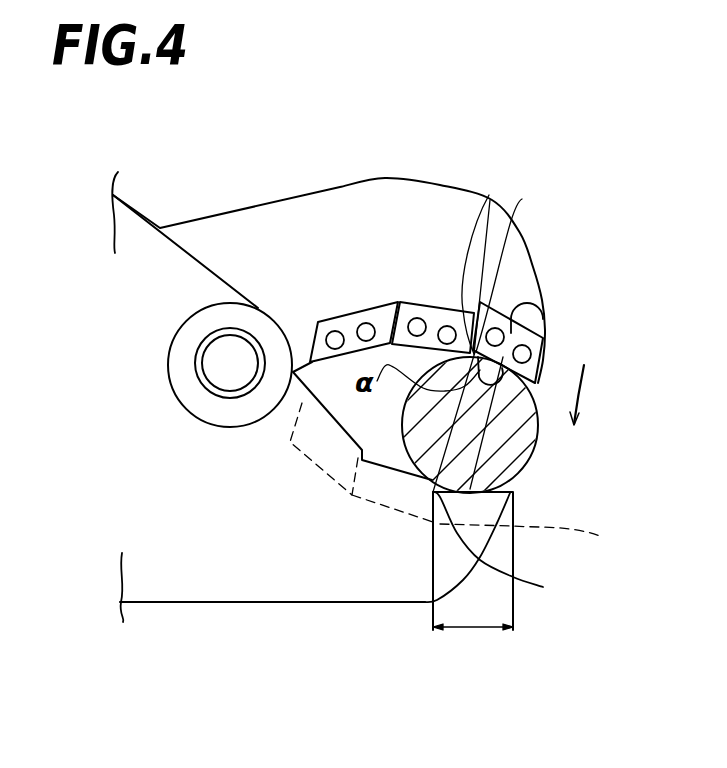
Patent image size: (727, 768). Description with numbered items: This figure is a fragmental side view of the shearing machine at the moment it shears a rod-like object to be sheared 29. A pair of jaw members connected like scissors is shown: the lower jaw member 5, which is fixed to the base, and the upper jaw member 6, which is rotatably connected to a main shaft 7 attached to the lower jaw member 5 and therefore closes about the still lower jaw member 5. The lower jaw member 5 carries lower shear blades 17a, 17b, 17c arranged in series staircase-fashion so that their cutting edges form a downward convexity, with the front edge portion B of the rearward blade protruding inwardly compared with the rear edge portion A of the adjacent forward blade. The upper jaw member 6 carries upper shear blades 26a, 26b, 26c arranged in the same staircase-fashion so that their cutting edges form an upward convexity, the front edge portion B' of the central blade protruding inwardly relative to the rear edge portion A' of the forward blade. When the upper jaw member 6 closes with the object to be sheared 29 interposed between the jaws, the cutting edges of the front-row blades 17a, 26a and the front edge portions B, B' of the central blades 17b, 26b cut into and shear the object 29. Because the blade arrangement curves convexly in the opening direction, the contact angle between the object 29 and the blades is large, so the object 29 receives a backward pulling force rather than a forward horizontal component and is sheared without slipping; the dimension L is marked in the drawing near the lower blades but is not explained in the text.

The lower jaw member 5 is at (201, 585).
The upper jaw member 6 is at (270, 215).
The main shaft 7 is at (212, 377).
The lower shear blade 17a is at (545, 535).
The lower shear blade 17b is at (373, 500).
The lower shear blade 17c is at (311, 462).
The upper shear blade 26a is at (545, 307).
The upper shear blade 26b is at (433, 318).
The upper shear blade 26c is at (352, 318).
The object to be sheared 29 is at (507, 442).
The rear edge portion A is at (503, 547).
The front edge portion B is at (453, 547).
The rear edge portion A' is at (509, 262).
The front edge portion B' is at (481, 258).
The distance L is at (473, 561).